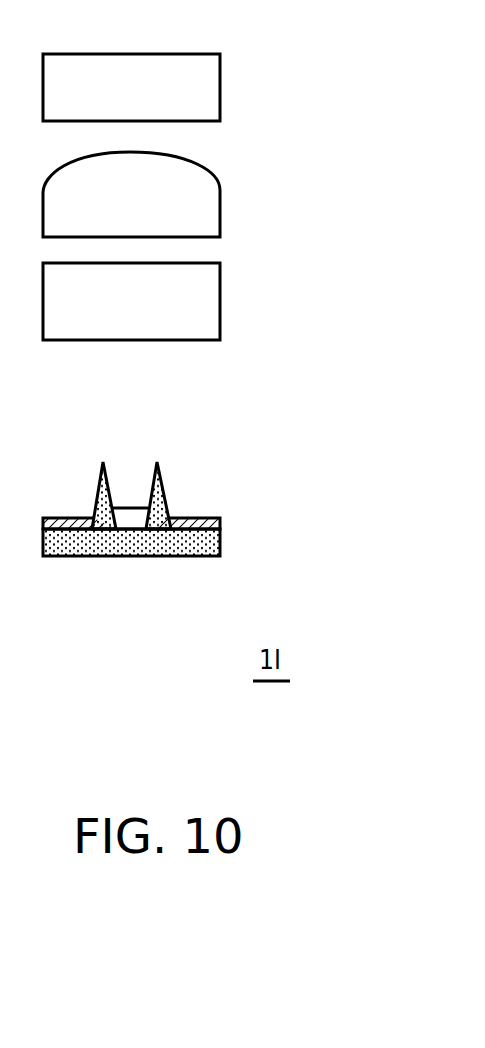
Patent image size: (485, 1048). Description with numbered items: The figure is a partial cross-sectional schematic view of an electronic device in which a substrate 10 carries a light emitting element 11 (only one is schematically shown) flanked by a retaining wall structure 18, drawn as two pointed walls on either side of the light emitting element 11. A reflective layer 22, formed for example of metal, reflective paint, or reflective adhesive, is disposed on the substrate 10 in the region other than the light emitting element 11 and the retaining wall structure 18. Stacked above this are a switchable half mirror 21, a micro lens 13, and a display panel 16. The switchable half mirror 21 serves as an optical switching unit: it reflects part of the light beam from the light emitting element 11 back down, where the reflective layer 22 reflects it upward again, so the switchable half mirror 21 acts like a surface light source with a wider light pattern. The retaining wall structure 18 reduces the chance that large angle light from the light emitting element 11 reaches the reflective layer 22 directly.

The substrate 10 is at (197, 549).
The light emitting element 11 is at (130, 520).
The micro lens 13 is at (197, 213).
The display panel 16 is at (197, 89).
The retaining wall structure 18 is at (165, 497).
The switchable half mirror 21 is at (197, 306).
The reflective layer 22 is at (197, 525).